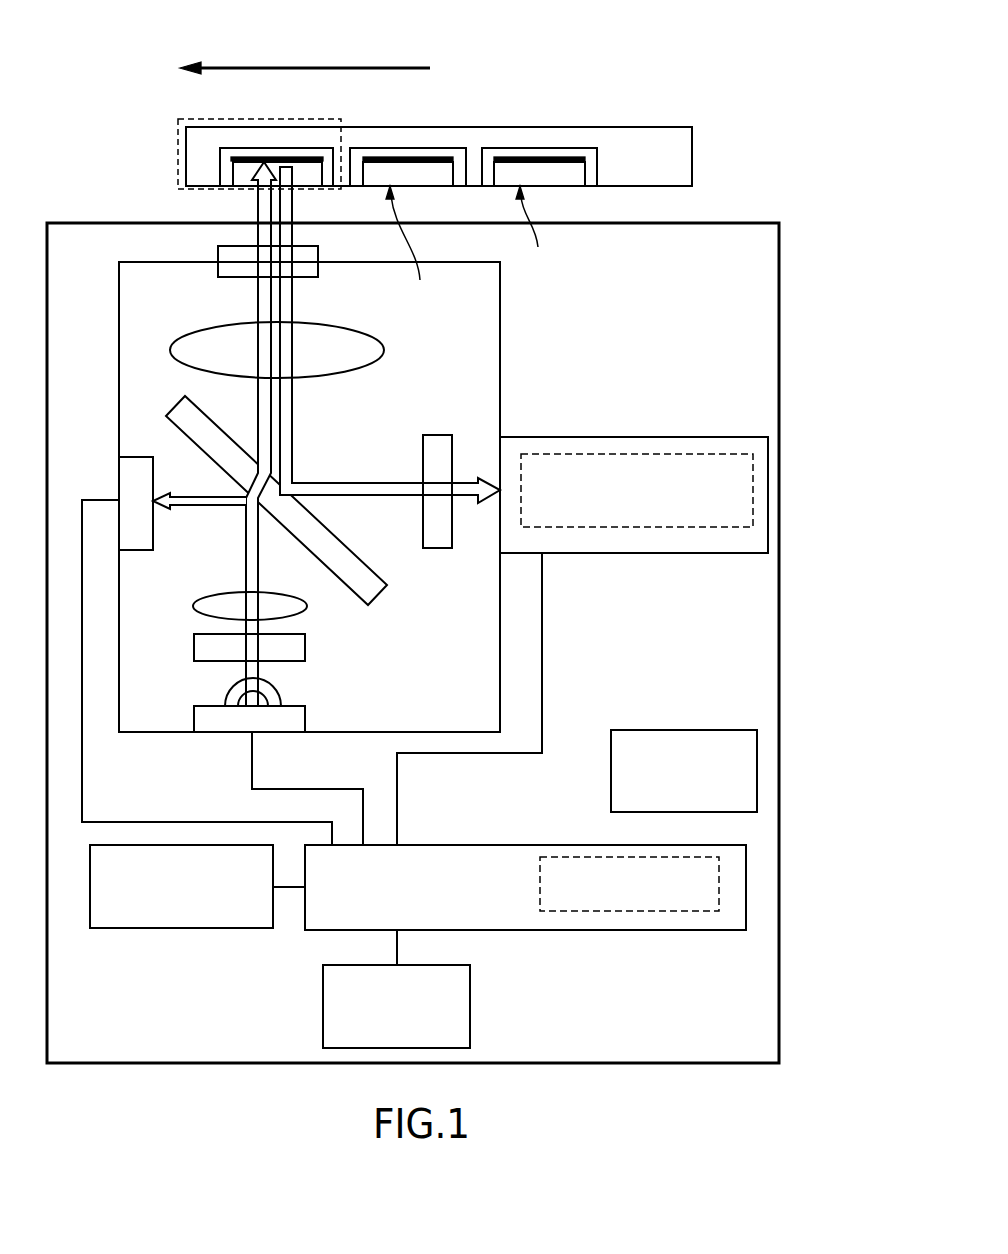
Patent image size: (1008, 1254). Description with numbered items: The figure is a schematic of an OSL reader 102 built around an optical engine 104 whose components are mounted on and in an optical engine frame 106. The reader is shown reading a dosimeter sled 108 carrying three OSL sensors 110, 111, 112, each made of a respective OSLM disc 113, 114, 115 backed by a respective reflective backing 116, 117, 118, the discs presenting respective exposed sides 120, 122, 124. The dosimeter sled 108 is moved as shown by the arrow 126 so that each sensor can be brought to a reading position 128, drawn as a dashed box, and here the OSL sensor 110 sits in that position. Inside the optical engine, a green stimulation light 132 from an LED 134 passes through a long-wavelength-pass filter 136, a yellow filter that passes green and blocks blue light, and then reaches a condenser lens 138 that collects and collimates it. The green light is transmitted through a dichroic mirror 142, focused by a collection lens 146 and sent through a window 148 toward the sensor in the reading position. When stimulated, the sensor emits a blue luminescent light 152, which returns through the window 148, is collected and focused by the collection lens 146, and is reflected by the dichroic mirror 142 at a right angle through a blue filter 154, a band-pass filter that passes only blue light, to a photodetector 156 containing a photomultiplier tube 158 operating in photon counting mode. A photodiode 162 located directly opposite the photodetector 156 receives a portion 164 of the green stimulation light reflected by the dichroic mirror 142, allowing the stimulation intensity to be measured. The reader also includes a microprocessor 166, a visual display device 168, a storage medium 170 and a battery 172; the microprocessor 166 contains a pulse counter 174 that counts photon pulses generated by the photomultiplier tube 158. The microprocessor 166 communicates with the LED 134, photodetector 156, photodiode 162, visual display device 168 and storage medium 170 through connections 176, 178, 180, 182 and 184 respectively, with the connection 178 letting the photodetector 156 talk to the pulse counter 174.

The OSL reader 102 is at (779, 611).
The optical engine 104 is at (532, 366).
The optical engine frame 106 is at (500, 283).
The dosimeter sled 108 is at (677, 146).
The OSL sensor 110 is at (300, 172).
The OSL sensor 111 is at (415, 173).
The OSL sensor 112 is at (550, 173).
The OSLM disc 113 is at (247, 168).
The OSLM disc 114 is at (377, 170).
The OSLM disc 115 is at (508, 170).
The reflective backing 116 is at (305, 157).
The reflective backing 117 is at (435, 157).
The reflective backing 118 is at (558, 157).
The exposed side 120 is at (238, 183).
The exposed side 122 is at (411, 248).
The exposed side 124 is at (536, 233).
The arrow 126 is at (315, 66).
The reading position 128 is at (178, 148).
The green stimulation light 132 is at (252, 566).
The LED 134 is at (292, 713).
The long-wavelength-pass filter 136 is at (295, 653).
The condenser lens 138 is at (288, 607).
The dichroic mirror 142 is at (373, 592).
The collection lens 146 is at (192, 355).
The window 148 is at (222, 268).
The blue luminescent light 152 is at (285, 430).
The blue filter 154 is at (435, 435).
The photodetector 156 is at (582, 436).
The photomultiplier tube 158 is at (663, 455).
The photodiode 162 is at (135, 550).
The portion of green stimulation light 164 is at (212, 505).
The microprocessor 166 is at (477, 845).
The visual display device 168 is at (182, 928).
The storage medium 170 is at (470, 1028).
The battery 172 is at (750, 780).
The pulse counter 174 is at (633, 912).
The connection 176 is at (252, 762).
The connection 178 is at (443, 753).
The connection 180 is at (101, 498).
The connection 182 is at (290, 887).
The connection 184 is at (397, 942).